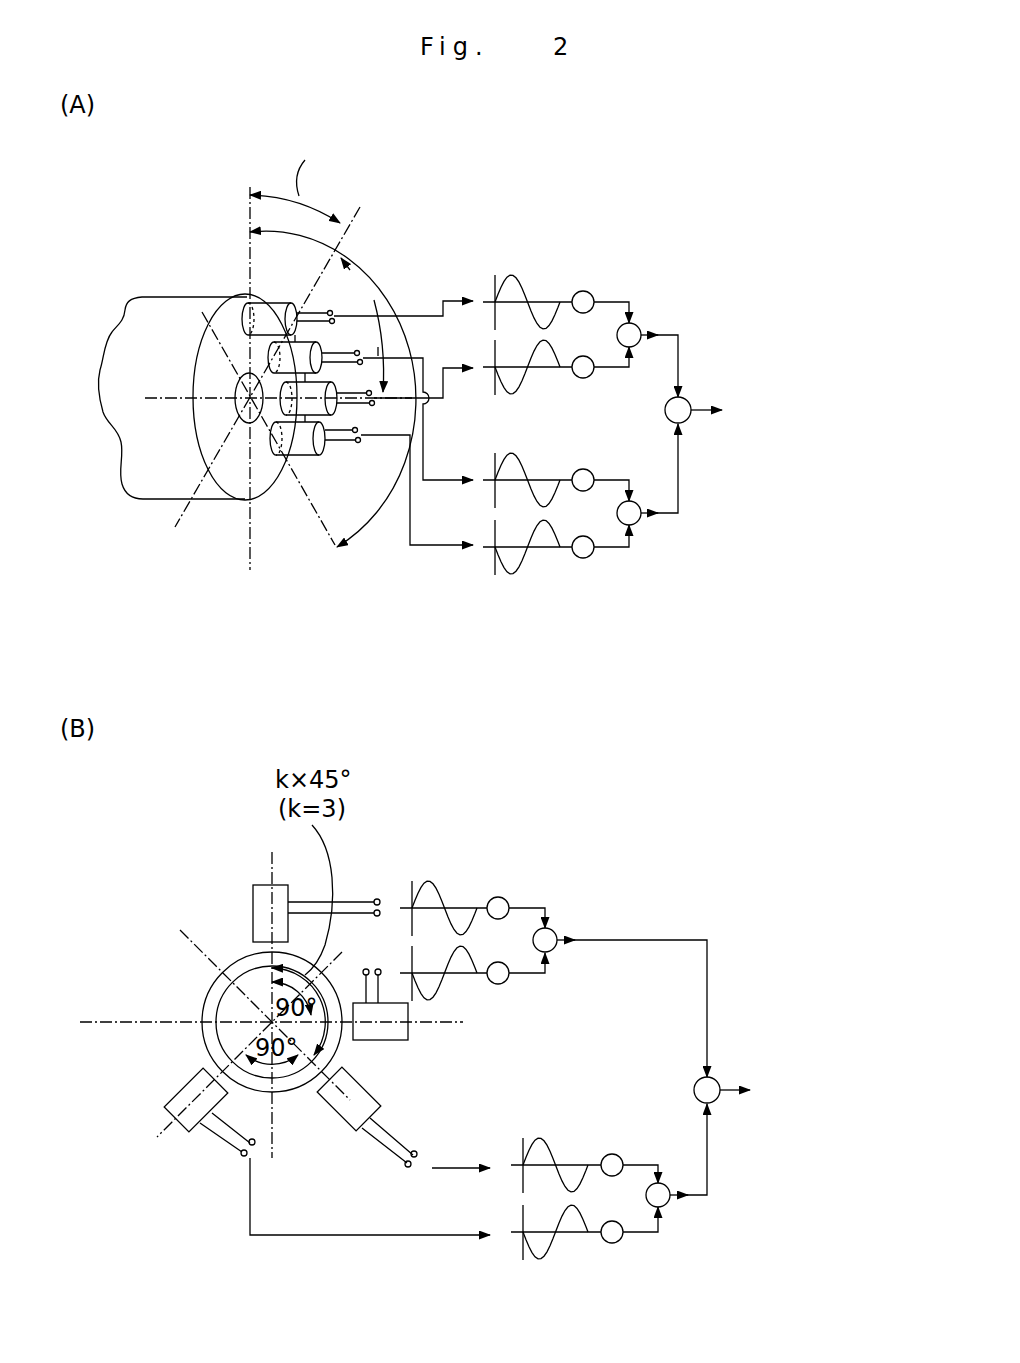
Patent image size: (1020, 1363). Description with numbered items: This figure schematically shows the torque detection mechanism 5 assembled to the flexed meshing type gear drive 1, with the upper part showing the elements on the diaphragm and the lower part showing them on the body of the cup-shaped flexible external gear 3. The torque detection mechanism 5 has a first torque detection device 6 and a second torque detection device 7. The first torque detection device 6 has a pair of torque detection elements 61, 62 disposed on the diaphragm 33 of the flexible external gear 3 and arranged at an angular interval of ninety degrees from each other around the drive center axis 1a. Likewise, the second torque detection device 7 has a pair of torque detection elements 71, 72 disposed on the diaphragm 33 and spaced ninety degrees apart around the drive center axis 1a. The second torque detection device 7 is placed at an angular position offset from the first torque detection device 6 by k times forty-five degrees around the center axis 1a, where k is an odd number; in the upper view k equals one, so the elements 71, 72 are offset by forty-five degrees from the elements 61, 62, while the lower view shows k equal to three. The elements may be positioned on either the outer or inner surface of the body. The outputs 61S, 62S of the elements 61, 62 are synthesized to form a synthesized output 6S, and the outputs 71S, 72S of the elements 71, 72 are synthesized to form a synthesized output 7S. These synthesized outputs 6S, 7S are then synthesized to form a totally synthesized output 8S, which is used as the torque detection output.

The flexed meshing type gear drive 1 is at (140, 285).
The drive center axis 1a is at (168, 397).
The flexible external gear 3 is at (152, 512).
The diaphragm 33 is at (236, 458).
The torque detection mechanism 5 is at (410, 243).
The first torque detection device 6 is at (432, 700).
The second torque detection device 7 is at (404, 718).
The torque detection element 61 is at (270, 352).
The torque detection element 62 is at (298, 445).
The torque detection element 71 is at (275, 305).
The torque detection element 72 is at (280, 405).
The output of torque detection element 61 61S is at (496, 647).
The output of torque detection element 62 62S is at (495, 720).
The output of torque detection element 71 71S is at (496, 733).
The output of torque detection element 72 72S is at (425, 798).
The synthesized output 6S is at (620, 750).
The synthesized output 7S is at (662, 764).
The totally synthesized output 8S is at (785, 751).